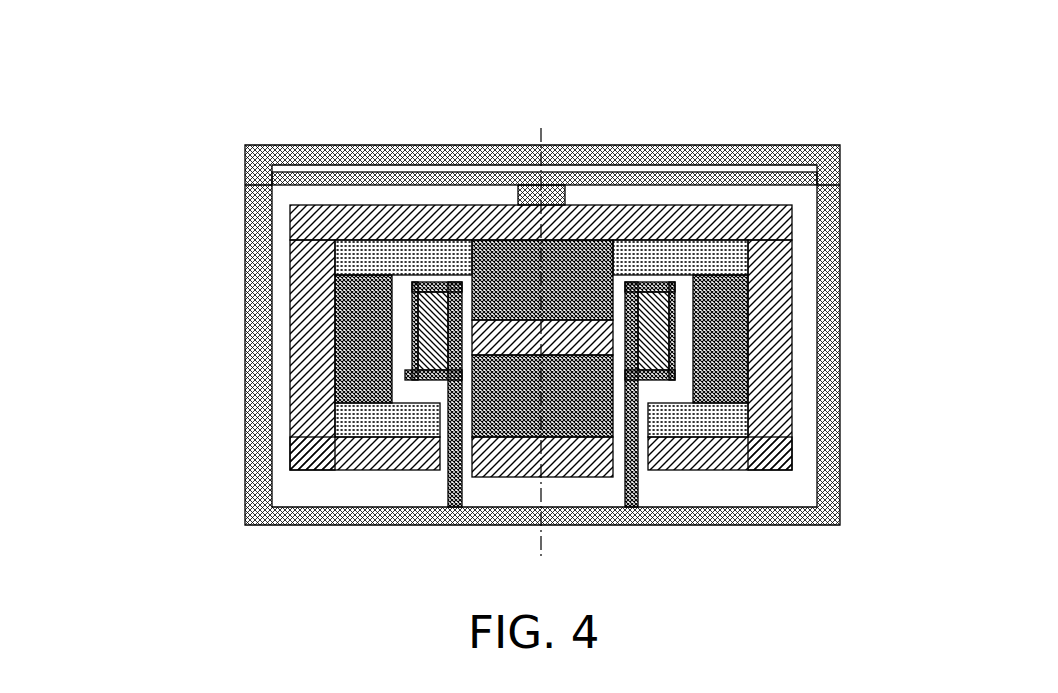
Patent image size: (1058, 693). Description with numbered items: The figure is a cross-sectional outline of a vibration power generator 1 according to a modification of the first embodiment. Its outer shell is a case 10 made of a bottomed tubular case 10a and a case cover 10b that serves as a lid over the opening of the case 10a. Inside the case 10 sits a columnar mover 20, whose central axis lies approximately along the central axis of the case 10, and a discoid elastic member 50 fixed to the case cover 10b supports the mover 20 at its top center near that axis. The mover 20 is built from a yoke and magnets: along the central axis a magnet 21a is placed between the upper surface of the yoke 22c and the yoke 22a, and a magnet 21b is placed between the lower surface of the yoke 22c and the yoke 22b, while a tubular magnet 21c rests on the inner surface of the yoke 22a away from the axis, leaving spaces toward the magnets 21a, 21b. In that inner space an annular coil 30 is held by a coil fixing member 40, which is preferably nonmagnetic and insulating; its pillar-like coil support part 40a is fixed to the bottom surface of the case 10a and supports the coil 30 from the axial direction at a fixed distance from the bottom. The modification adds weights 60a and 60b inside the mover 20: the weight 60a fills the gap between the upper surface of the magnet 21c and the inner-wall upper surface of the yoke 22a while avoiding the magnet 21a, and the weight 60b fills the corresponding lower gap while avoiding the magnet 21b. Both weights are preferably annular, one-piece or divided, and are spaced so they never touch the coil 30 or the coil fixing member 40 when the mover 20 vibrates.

The vibration power generator 1 is at (803, 108).
The case 10 is at (110, 93).
The bottomed tubular case 10a is at (262, 205).
The case cover 10b is at (262, 148).
The mover 20 is at (802, 217).
The magnet 21a is at (640, 262).
The magnet 21b is at (690, 425).
The tubular magnet 21c is at (340, 355).
The yoke 22a is at (770, 270).
The yoke 22b is at (523, 463).
The yoke 22c is at (527, 312).
The coil 30 is at (375, 312).
The coil fixing member 40 is at (362, 425).
The coil support part 40a is at (445, 484).
The elastic member 50 is at (817, 174).
The weight 60a is at (360, 260).
The weight 60b is at (303, 463).